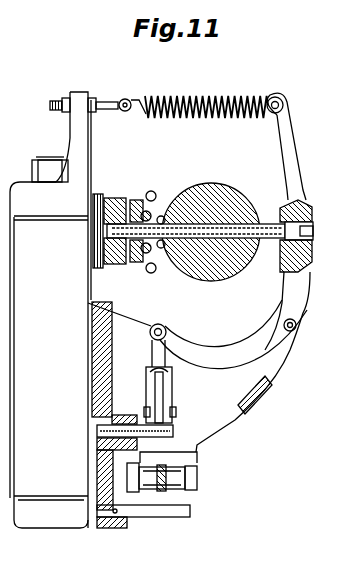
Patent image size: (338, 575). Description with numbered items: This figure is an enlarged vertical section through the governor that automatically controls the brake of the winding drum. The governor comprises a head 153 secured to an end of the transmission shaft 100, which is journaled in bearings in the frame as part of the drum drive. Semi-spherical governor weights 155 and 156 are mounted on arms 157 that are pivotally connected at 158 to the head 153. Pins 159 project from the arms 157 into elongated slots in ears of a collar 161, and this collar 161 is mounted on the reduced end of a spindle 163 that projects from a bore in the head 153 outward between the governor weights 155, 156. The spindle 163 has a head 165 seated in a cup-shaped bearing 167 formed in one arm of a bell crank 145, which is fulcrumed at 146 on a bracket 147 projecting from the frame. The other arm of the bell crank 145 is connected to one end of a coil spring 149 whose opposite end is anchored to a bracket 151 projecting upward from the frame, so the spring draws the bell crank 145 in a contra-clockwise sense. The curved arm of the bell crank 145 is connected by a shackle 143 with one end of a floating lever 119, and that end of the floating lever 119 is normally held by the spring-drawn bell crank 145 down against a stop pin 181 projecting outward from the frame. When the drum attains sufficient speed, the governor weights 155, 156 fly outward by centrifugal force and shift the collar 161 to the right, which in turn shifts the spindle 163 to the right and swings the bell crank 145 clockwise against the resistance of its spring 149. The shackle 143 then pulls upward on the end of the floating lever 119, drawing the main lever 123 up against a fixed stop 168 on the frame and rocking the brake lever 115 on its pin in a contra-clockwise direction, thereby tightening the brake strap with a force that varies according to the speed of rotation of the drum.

The transmission shaft 100 is at (93, 226).
The bracket 151 is at (78, 137).
The coil spring 149 is at (200, 96).
The bracket 147 is at (283, 378).
The governor weight 155 is at (221, 185).
The governor weight 156 is at (236, 266).
The spindle 163 is at (250, 222).
The head 165 is at (300, 216).
The cup-shaped bearing 167 is at (277, 246).
The head 153 is at (122, 190).
The pivot 158 is at (166, 182).
The pins 159 is at (150, 192).
The collar 161 is at (148, 268).
The arms 157 is at (170, 216).
The bell crank 145 is at (227, 355).
The fulcrum 146 is at (297, 327).
The shackle 143 is at (172, 392).
The floating lever 119 is at (157, 397).
The stop pin 181 is at (171, 430).
The fixed stop 168 is at (190, 458).
The main lever 123 is at (198, 489).
The lever 115 is at (161, 517).